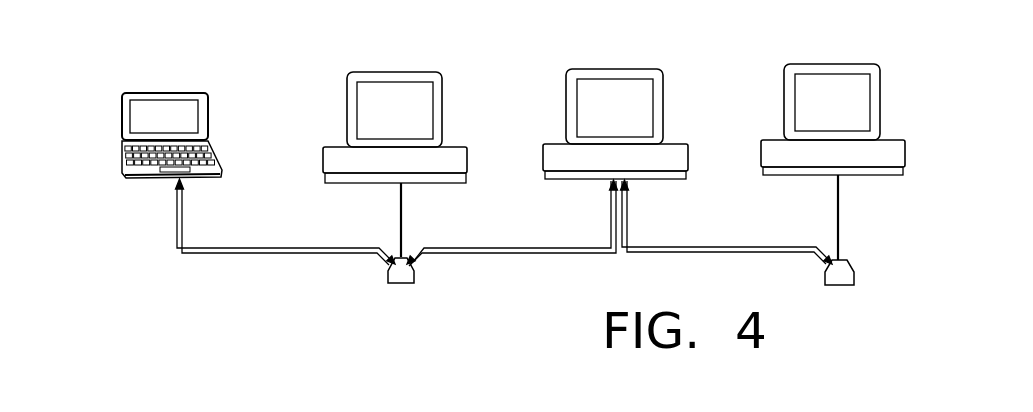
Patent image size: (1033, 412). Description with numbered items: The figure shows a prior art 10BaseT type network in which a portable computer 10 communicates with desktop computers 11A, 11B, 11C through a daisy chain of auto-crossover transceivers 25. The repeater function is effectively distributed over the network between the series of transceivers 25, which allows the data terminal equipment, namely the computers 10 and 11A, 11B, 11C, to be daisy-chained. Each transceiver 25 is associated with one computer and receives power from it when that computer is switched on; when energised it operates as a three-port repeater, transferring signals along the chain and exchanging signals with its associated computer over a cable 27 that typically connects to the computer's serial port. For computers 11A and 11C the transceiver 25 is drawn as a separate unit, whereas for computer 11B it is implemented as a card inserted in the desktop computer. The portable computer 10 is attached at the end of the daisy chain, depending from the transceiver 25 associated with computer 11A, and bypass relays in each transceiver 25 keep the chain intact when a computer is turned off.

The portable computer 10 is at (183, 94).
The desktop computer 11A is at (357, 83).
The desktop computer 11B is at (572, 79).
The desktop computer 11C is at (790, 77).
The auto-crossover transceiver 25 is at (388, 273).
The cable 27 is at (403, 209).